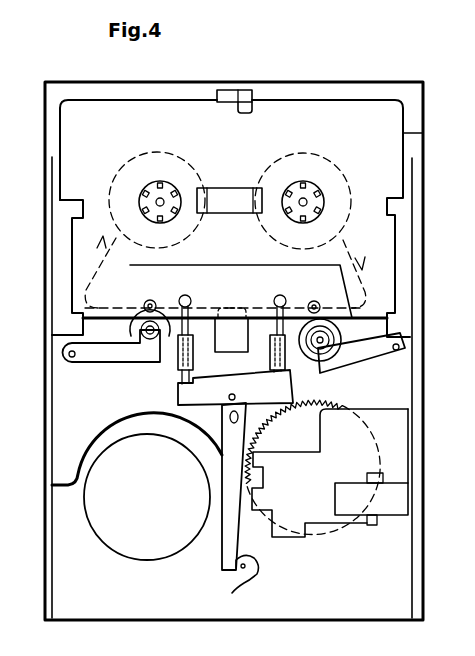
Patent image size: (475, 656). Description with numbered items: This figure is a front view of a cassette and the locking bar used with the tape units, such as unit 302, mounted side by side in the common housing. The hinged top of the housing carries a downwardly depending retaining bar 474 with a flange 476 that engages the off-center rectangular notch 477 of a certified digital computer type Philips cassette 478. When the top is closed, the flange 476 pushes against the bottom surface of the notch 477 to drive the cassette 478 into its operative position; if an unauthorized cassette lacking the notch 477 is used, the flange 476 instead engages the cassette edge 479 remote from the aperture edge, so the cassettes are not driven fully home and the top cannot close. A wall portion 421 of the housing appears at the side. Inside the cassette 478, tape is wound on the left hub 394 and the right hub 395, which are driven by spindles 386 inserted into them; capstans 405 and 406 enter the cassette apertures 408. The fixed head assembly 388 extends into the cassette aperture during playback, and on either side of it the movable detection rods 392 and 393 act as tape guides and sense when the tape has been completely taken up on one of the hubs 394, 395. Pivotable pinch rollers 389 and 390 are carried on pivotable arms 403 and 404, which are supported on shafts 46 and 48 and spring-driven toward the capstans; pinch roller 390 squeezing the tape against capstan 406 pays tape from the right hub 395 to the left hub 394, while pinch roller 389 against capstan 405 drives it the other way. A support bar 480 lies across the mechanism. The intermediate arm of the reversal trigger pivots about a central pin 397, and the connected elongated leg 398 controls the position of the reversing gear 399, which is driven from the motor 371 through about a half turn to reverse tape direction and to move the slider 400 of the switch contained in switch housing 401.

The unit 302 is at (470, 7).
The retaining bar 474 is at (255, 100).
The edge of the cassette 479 is at (357, 110).
The off-center rectangular notch 477 is at (238, 106).
The flange 476 is at (252, 110).
The cassette 478 is at (423, 133).
The housing wall 421 is at (462, 259).
The left hub 394 is at (148, 183).
The right hub 395 is at (290, 185).
The spindle 386 is at (163, 200).
The capstan 405 is at (150, 300).
The capstan 406 is at (325, 298).
The apertures 408 is at (185, 296).
The head assembly 388 is at (238, 305).
The detection rod 392 is at (191, 374).
The detection rod 393 is at (235, 384).
The pinch roller 389 is at (166, 348).
The pinch roller 390 is at (308, 358).
The pivotable arm 403 is at (108, 362).
The pivotable arm 404 is at (357, 362).
The shaft 46 is at (74, 358).
The shaft 48 is at (400, 348).
The support bar 480 is at (372, 318).
The central pin 397 is at (197, 407).
The elongated leg 398 is at (226, 515).
The motor 371 is at (158, 504).
The reversing gear 399 is at (304, 437).
The slider 400 is at (233, 591).
The switch housing 401 is at (400, 501).